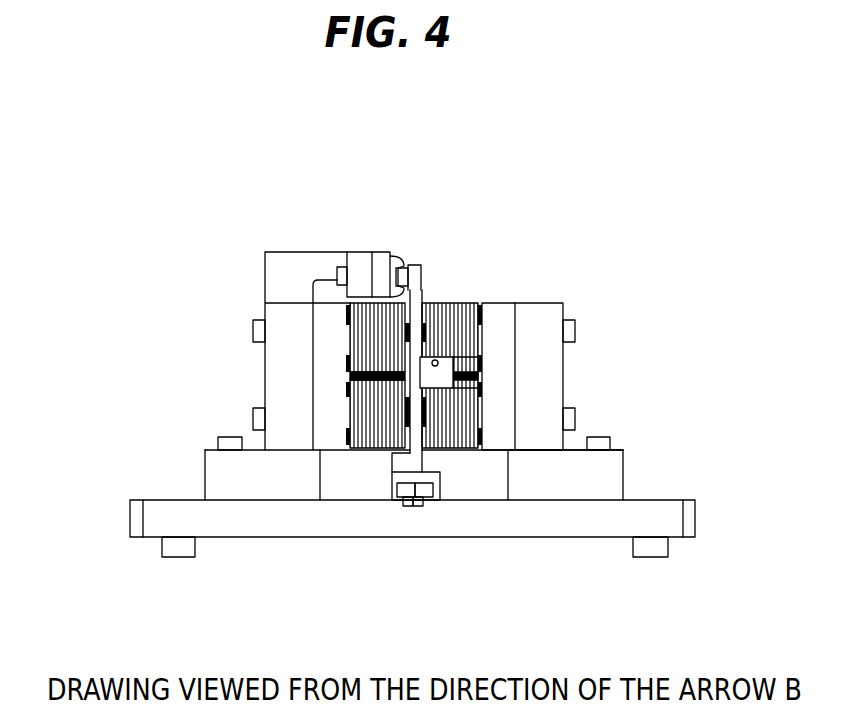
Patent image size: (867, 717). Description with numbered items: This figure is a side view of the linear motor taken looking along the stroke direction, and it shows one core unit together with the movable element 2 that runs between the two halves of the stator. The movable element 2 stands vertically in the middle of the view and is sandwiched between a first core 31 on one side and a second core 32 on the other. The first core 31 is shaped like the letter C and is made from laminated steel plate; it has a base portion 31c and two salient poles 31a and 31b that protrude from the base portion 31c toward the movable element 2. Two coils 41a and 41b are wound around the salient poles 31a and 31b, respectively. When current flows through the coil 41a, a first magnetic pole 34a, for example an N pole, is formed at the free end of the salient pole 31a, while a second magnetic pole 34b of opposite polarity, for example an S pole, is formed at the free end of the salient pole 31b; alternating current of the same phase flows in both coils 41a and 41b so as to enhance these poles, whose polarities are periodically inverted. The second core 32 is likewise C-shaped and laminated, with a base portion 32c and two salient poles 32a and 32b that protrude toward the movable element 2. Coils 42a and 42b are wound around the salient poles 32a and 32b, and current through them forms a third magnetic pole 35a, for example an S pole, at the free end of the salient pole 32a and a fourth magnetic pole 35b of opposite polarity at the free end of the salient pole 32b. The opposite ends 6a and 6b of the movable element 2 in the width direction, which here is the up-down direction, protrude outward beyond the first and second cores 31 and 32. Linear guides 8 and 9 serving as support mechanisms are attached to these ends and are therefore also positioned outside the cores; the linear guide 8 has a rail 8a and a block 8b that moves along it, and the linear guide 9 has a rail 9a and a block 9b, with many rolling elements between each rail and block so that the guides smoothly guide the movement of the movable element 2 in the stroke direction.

The movable element 2 is at (421, 330).
The lower end of the base member 6a is at (405, 466).
The upper end of the base member 6b is at (420, 282).
The linear guide 8 is at (429, 564).
The rail 8a is at (415, 506).
The block 8b is at (425, 506).
The linear guide 9 is at (396, 219).
The rail 9a is at (414, 234).
The block 9b is at (395, 262).
The first core 31 is at (549, 382).
The salient pole 31a is at (482, 320).
The salient pole 31b is at (458, 450).
The base portion 31c is at (500, 432).
The second core 32 is at (273, 351).
The salient pole 32a is at (358, 337).
The salient pole 32b is at (350, 415).
The base portion 32c is at (325, 392).
The first magnetic pole 34a is at (452, 325).
The second magnetic pole 34b is at (482, 405).
The third magnetic pole 35a is at (405, 333).
The fourth magnetic pole 35b is at (360, 413).
The coil 41a is at (465, 330).
The coil 41b is at (445, 445).
The coil 42a is at (370, 313).
The coil 42b is at (373, 448).